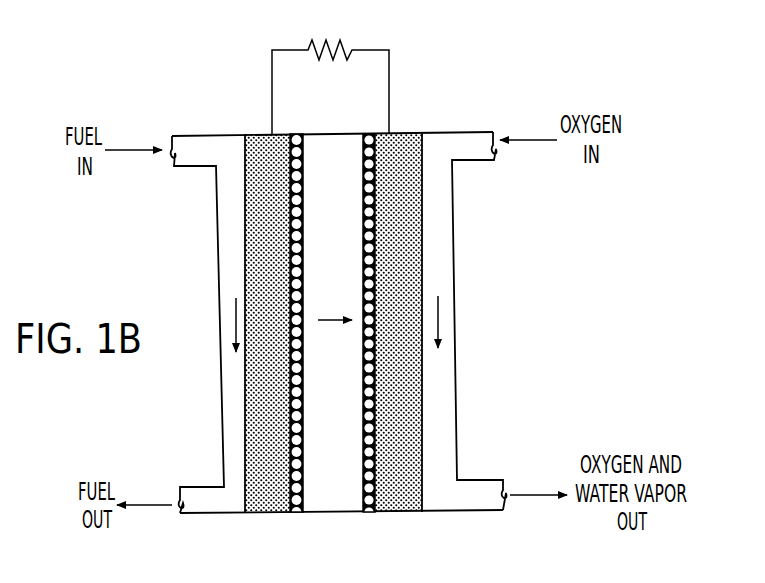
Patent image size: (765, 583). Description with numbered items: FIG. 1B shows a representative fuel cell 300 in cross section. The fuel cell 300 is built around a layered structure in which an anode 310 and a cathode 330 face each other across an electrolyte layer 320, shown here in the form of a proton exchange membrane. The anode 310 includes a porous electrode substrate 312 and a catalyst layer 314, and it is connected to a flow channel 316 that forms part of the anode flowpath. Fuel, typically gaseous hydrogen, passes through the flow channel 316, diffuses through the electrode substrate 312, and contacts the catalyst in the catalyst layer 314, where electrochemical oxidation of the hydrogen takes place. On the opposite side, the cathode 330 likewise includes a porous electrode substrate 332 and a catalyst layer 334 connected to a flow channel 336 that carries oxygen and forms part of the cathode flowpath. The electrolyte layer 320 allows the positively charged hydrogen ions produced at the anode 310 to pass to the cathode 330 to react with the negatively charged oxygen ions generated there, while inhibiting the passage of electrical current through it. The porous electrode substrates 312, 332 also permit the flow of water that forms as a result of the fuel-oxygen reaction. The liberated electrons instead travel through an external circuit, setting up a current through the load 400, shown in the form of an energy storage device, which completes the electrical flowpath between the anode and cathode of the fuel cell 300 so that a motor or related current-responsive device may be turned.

The fuel cell 300 is at (160, 72).
The anode 310 is at (303, 520).
The electrode substrate 312 is at (252, 134).
The catalyst layer 314 is at (295, 134).
The flow channel 316 is at (220, 224).
The electrolyte layer 320 is at (378, 520).
The cathode 330 is at (433, 520).
The electrode substrate 332 is at (408, 134).
The catalyst layer 334 is at (368, 134).
The flow channel 336 is at (451, 216).
The load 400 is at (338, 40).